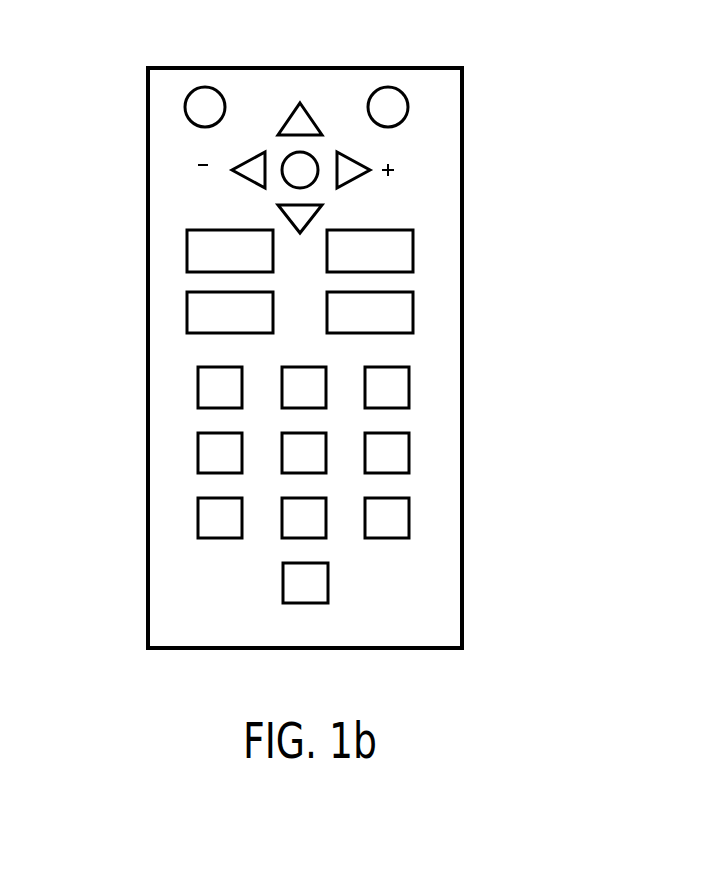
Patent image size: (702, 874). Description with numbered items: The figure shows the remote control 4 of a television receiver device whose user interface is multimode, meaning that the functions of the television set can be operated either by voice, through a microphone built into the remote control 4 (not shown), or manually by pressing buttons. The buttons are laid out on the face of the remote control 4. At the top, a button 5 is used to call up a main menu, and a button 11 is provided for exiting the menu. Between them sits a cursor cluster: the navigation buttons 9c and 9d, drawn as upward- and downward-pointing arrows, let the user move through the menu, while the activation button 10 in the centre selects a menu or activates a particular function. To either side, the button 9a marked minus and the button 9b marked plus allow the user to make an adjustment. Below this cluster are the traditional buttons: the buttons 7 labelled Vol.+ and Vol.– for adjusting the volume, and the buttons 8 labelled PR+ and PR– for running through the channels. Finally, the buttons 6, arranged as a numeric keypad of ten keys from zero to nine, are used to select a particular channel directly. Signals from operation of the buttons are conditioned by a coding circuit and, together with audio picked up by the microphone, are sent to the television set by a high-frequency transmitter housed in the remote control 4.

The remote control 4 is at (463, 535).
The main menu button 5 is at (393, 108).
The channel selection buttons 6 is at (283, 580).
The volume adjustment buttons 7 is at (187, 252).
The channel running buttons 8 is at (187, 318).
The minus adjustment button 9a is at (232, 170).
The plus adjustment button 9b is at (368, 170).
The navigation button 9c is at (307, 114).
The navigation button 9d is at (280, 206).
The activation button 10 is at (284, 157).
The menu exit button 11 is at (200, 107).